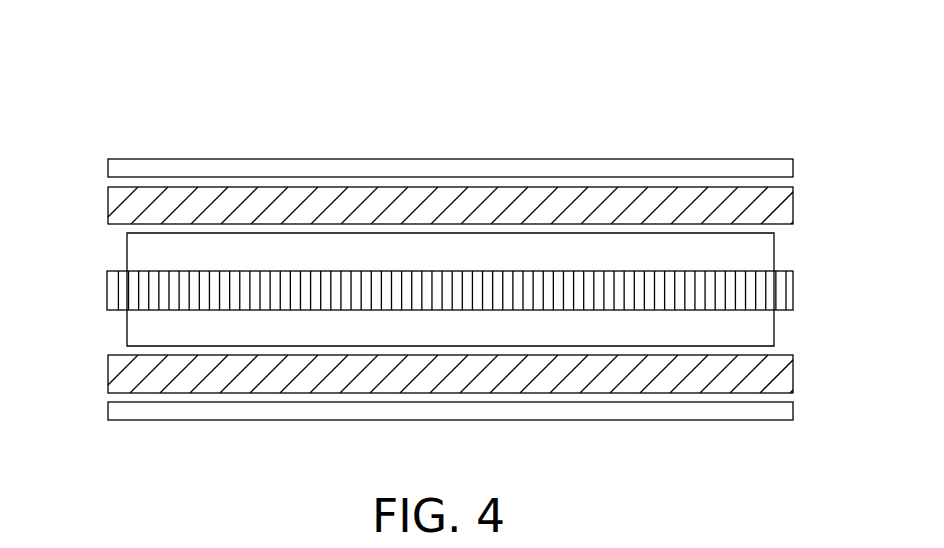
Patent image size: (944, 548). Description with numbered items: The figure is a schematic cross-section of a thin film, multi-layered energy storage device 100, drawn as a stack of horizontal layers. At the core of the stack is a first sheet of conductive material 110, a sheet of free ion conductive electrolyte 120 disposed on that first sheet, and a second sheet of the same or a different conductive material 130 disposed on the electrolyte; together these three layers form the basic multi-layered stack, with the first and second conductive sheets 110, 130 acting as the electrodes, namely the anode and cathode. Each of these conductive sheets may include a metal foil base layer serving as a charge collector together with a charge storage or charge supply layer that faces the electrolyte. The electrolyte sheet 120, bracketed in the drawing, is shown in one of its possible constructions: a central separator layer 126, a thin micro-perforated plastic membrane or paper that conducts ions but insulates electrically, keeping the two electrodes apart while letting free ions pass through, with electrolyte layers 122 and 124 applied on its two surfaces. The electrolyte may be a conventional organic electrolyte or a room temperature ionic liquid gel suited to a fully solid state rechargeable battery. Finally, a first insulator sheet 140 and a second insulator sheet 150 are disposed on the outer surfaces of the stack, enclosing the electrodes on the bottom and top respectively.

The multi-layered energy storage device 100 is at (520, 122).
The first sheet of conductive material 110 is at (765, 373).
The sheet of free ion conductive electrolyte 120 is at (451, 310).
The electrolyte layer 122 is at (136, 327).
The electrolyte layer 124 is at (136, 254).
The separator layer 126 is at (136, 290).
The second sheet of conductive material 130 is at (766, 206).
The first insulator sheet 140 is at (765, 410).
The second insulator sheet 150 is at (775, 170).